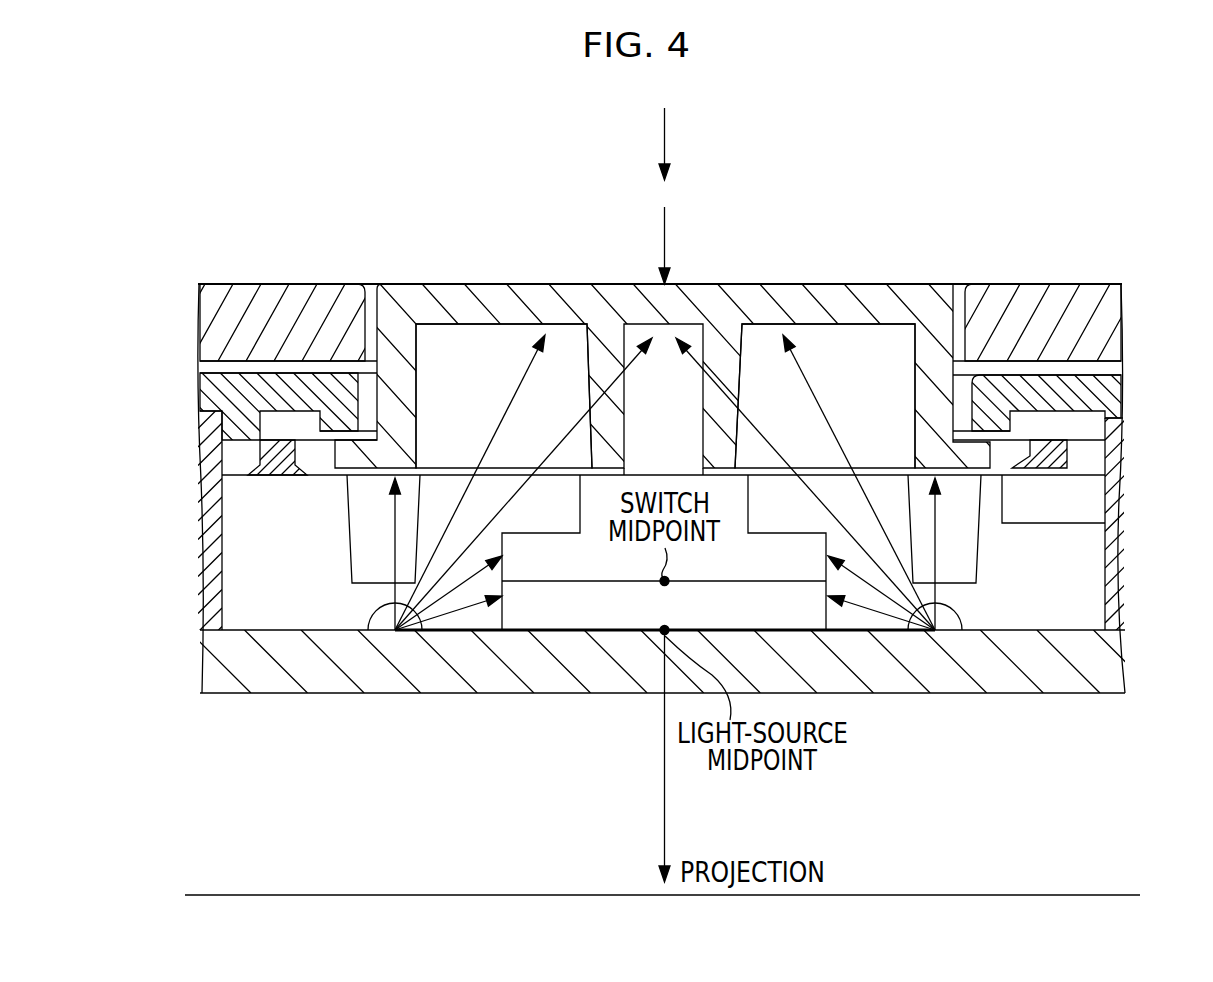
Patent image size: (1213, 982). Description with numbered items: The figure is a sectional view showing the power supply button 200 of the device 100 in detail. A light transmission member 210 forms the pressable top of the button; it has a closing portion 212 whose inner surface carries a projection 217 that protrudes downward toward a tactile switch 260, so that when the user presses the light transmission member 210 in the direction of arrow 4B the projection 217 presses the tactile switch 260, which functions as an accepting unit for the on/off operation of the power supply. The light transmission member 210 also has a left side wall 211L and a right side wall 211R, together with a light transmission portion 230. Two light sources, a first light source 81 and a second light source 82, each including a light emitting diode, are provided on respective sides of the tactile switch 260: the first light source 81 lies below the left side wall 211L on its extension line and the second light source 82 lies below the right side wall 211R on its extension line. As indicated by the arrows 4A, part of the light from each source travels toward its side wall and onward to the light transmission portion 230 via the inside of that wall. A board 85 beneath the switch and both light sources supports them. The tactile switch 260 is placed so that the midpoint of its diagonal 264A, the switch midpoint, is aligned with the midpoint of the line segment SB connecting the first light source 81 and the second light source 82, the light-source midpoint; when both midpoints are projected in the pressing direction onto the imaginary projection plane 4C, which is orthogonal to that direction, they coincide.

The electronic device 100 is at (198, 218).
The power supply button 200 is at (957, 186).
The light transmission portion 230 is at (388, 281).
The light transmission member 210 is at (607, 257).
The projection 217 is at (557, 284).
The closing portion 212 is at (833, 284).
The arrow 4B is at (665, 240).
The left side wall 211L is at (393, 397).
The right side wall 211R is at (932, 348).
The arrow 4A is at (395, 535).
The first light source 81 is at (383, 620).
The second light source 82 is at (948, 620).
The tactile switch 260 is at (533, 605).
The diagonal 264A is at (597, 583).
The line segment SB is at (885, 633).
The board 85 is at (1057, 673).
The projection plane 4C is at (1053, 895).